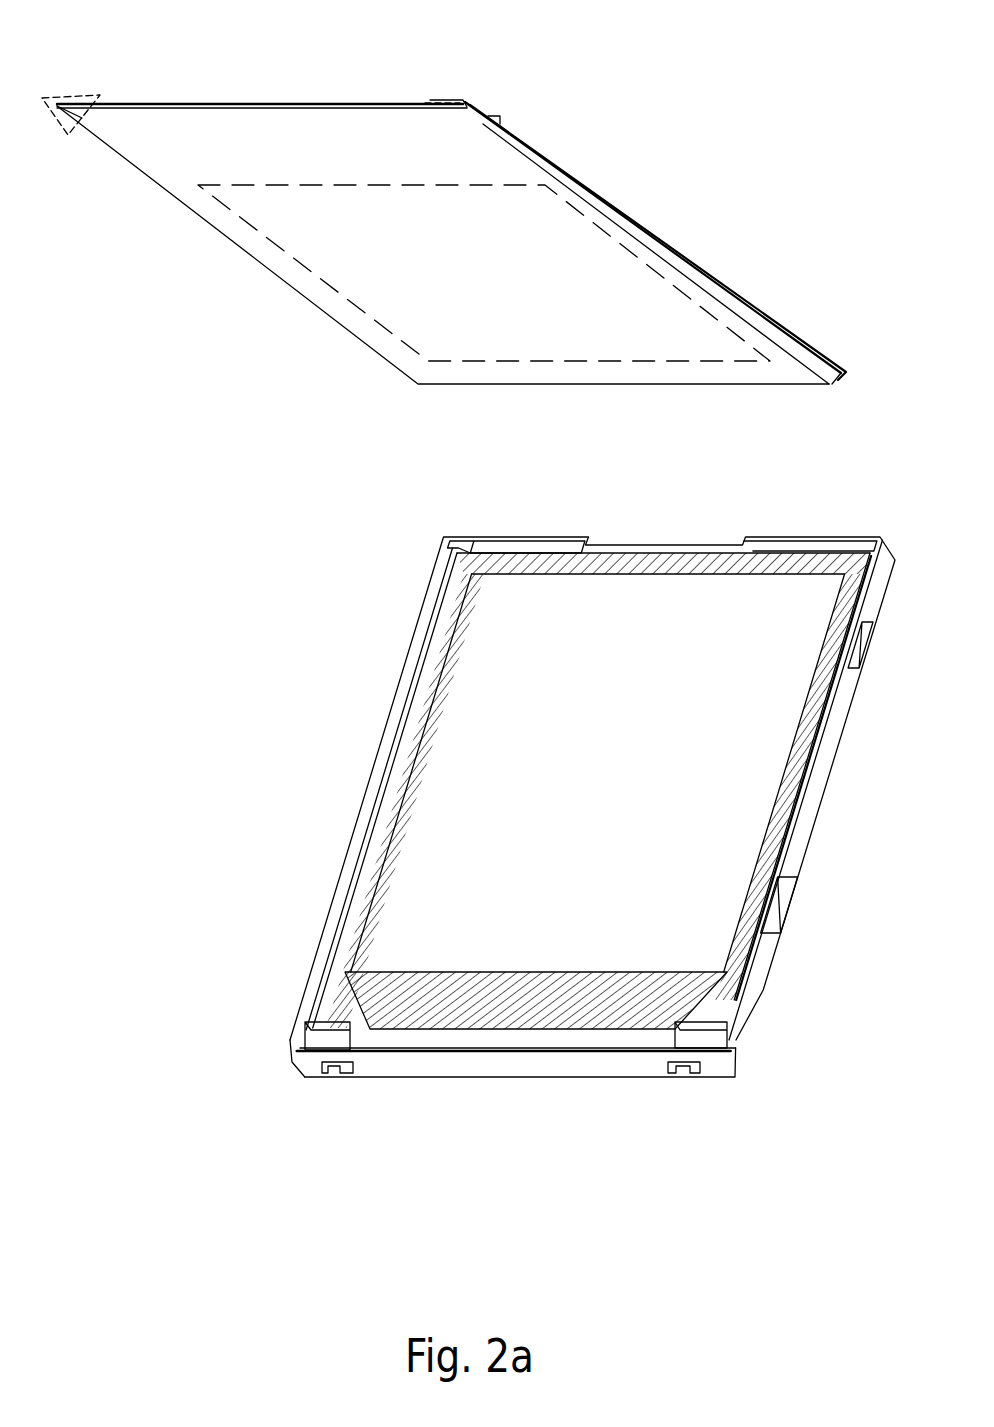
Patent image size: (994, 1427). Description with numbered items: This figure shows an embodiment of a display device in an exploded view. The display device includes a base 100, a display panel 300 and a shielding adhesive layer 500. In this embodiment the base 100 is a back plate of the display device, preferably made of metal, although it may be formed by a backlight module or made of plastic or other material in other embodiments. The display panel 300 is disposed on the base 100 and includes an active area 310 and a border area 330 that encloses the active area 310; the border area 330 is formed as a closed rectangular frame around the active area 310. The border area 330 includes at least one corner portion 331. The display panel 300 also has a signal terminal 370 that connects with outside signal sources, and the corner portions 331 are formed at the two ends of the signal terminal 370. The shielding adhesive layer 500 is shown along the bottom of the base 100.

The base 100 is at (535, 807).
The display panel 300 is at (444, 197).
The active area 310 is at (630, 302).
The border area 330 is at (627, 240).
The corner portion 331 is at (82, 118).
The signal terminal 370 is at (272, 105).
The shielding adhesive layer 500 is at (382, 997).